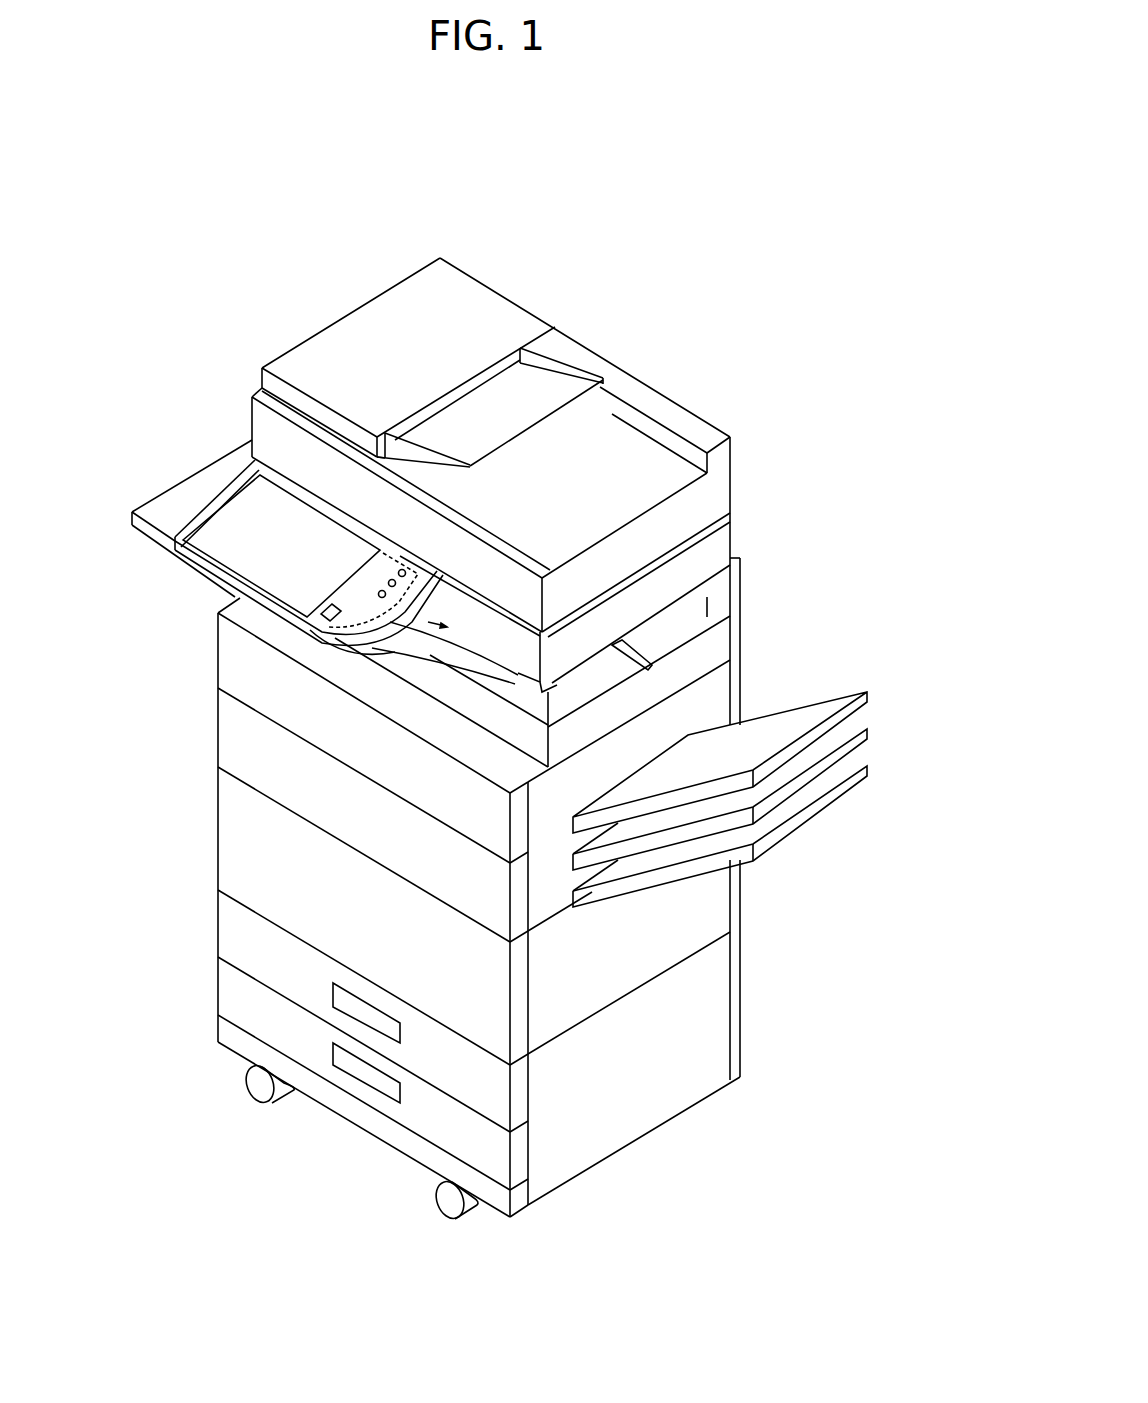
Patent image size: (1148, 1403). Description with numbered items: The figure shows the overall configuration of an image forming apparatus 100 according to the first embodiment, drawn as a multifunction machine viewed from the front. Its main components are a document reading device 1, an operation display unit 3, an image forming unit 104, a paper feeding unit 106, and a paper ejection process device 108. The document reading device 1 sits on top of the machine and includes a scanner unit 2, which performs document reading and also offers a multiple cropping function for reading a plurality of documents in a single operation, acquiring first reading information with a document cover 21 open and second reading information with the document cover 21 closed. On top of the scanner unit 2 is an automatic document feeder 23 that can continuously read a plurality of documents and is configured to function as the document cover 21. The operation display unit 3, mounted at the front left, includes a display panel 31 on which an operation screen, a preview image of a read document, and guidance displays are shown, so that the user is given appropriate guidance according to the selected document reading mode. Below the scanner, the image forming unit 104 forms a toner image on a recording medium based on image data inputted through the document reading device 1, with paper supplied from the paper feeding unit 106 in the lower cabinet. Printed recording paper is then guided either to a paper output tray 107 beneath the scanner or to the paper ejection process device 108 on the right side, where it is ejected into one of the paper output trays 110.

The image forming apparatus 100 is at (722, 287).
The document reading device 1 is at (723, 414).
The scanner unit 2 is at (744, 536).
The operation display unit 3 is at (217, 600).
The document cover 21 is at (688, 511).
The automatic document feeder 23 is at (473, 344).
The display panel 31 is at (235, 523).
The image forming unit 104 is at (196, 793).
The paper feeding unit 106 is at (196, 958).
The paper output tray 107 is at (693, 616).
The paper ejection process device 108 is at (866, 660).
The paper output trays 110 is at (869, 692).